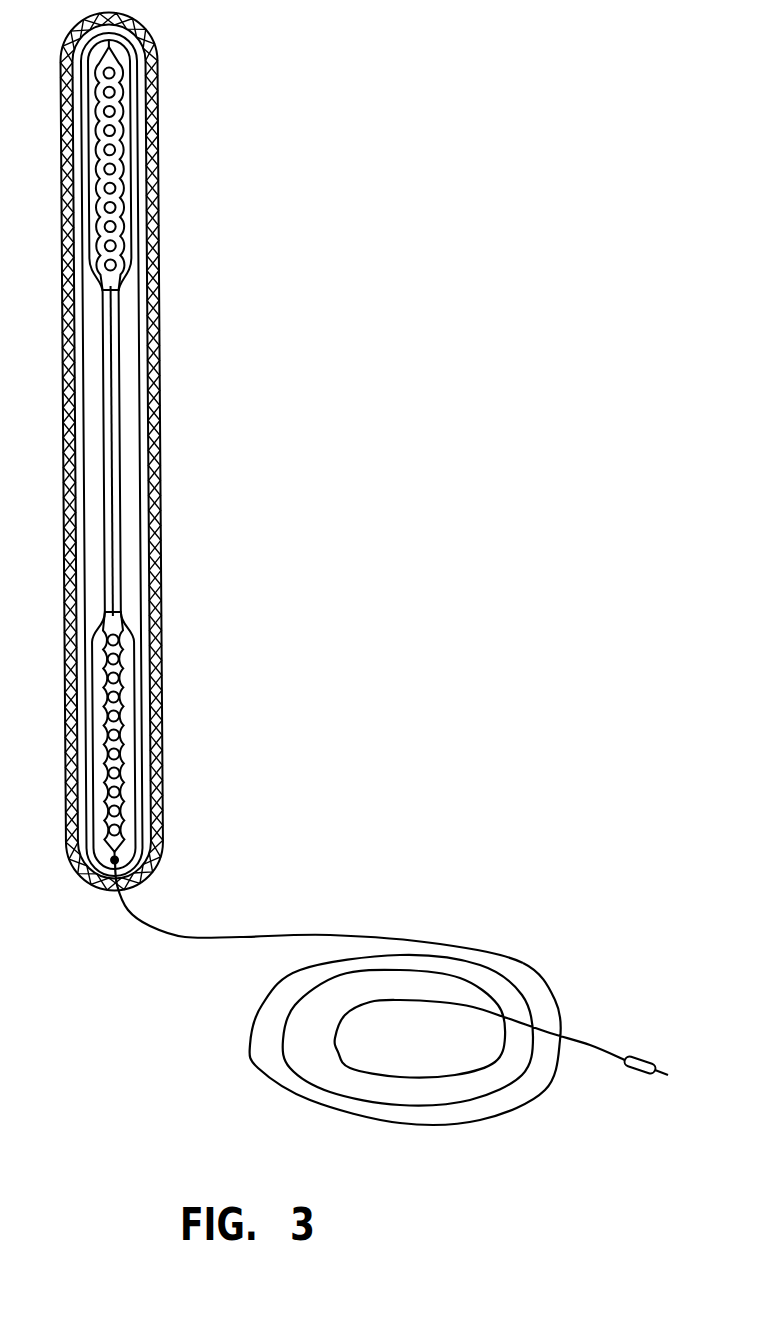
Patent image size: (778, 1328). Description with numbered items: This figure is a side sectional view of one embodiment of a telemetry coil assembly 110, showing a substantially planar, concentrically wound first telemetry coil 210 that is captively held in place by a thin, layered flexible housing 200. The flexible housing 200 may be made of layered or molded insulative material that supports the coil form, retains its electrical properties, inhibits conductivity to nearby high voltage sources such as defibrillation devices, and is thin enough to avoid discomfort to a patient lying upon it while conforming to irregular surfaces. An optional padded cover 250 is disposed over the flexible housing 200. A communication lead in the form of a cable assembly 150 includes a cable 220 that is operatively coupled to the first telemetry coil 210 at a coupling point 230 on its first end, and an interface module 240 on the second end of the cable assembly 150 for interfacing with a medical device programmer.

The telemetry coil assembly 110 is at (255, 125).
The first telemetry coil 210 is at (123, 110).
The flexible housing 200 is at (115, 301).
The padded cover 250 is at (160, 451).
The coupling point 230 is at (150, 861).
The cable 220 is at (186, 939).
The cable assembly 150 is at (518, 915).
The interface module 240 is at (645, 1061).